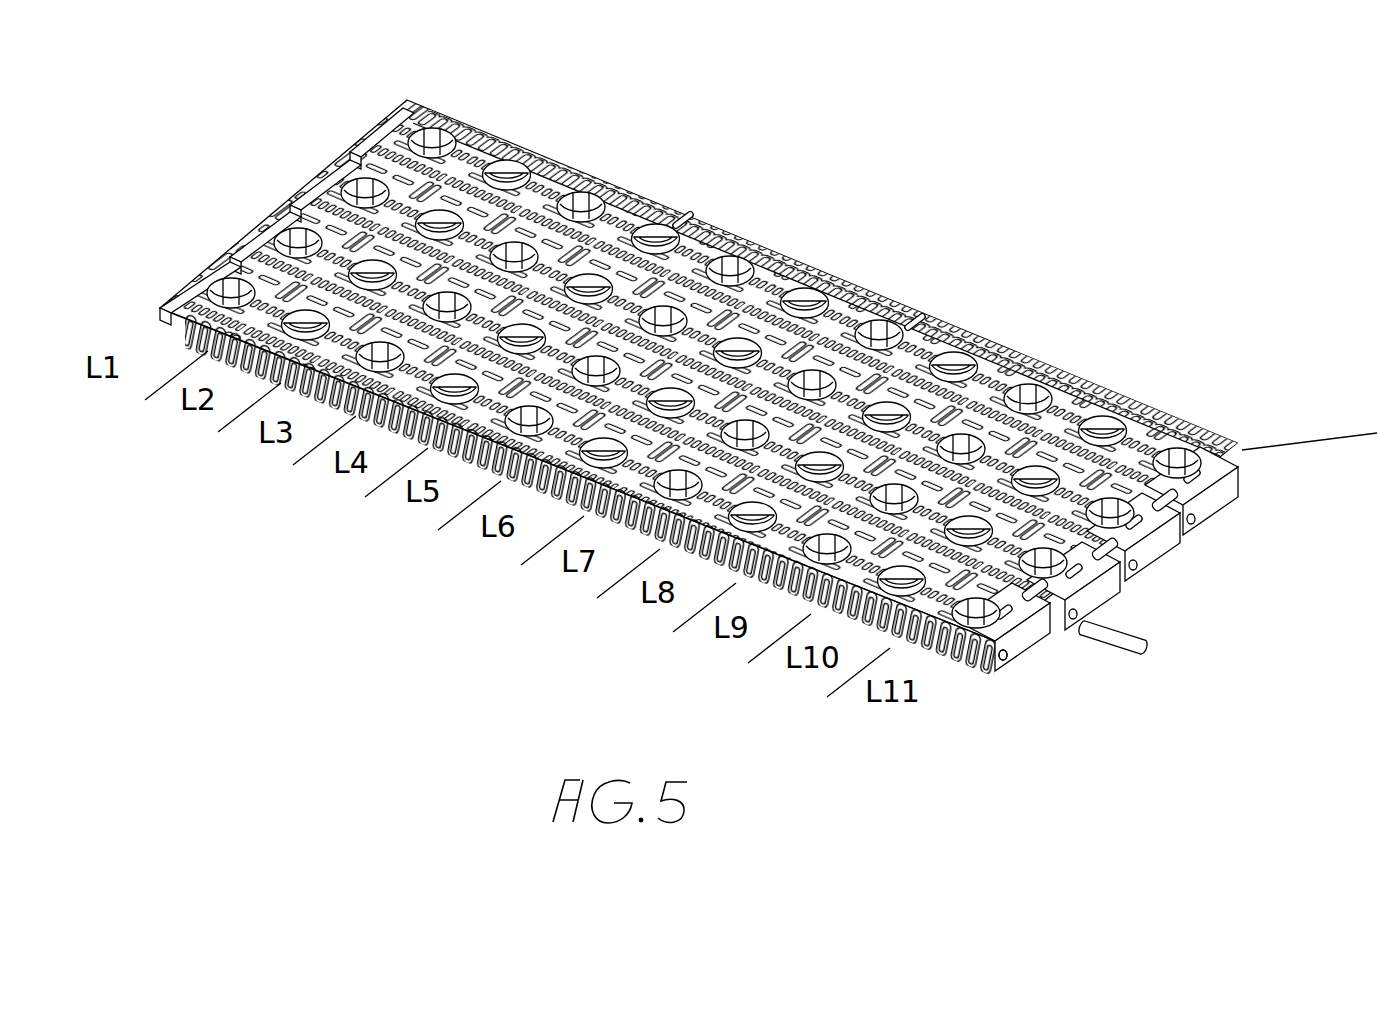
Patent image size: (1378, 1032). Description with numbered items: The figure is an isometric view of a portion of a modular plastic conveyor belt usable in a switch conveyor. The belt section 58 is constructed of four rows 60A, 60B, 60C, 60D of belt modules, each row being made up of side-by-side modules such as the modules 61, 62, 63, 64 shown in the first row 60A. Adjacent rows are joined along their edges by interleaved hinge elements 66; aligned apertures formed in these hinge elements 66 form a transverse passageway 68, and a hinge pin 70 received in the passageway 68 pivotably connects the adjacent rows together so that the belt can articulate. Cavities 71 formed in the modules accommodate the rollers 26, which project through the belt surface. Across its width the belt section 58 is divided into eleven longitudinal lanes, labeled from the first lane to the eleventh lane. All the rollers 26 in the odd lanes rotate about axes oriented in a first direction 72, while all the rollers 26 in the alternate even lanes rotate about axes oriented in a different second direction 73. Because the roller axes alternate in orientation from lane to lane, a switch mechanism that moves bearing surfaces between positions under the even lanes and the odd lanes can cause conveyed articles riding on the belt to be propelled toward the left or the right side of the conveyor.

The belt section 58 is at (840, 129).
The row of belt modules 60A is at (750, 307).
The row of belt modules 60B is at (275, 187).
The row of belt modules 60C is at (208, 238).
The row of belt modules 60D is at (586, 504).
The rollers 26 is at (575, 200).
The belt module 61 is at (1165, 412).
The belt module 62 is at (915, 315).
The belt module 63 is at (683, 213).
The belt module 64 is at (513, 158).
The hinge elements 66 is at (1033, 593).
The transverse passageway 68 is at (1002, 667).
The hinge pin 70 is at (1122, 635).
The cavities 71 is at (800, 285).
The first direction 72 is at (1325, 437).
The second direction 73 is at (1108, 377).